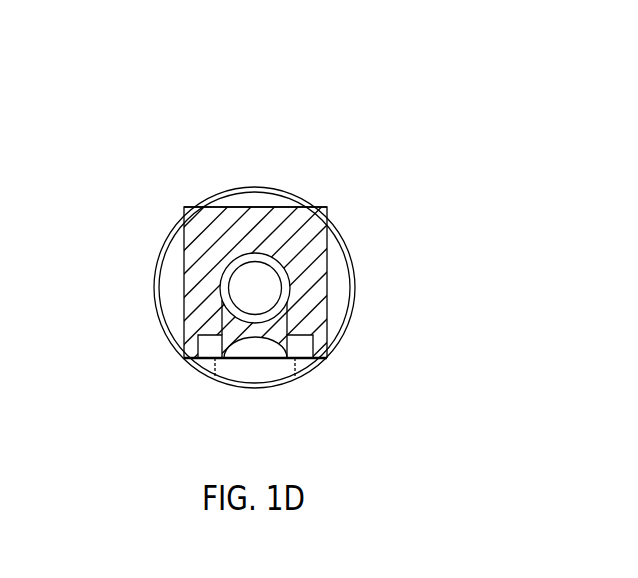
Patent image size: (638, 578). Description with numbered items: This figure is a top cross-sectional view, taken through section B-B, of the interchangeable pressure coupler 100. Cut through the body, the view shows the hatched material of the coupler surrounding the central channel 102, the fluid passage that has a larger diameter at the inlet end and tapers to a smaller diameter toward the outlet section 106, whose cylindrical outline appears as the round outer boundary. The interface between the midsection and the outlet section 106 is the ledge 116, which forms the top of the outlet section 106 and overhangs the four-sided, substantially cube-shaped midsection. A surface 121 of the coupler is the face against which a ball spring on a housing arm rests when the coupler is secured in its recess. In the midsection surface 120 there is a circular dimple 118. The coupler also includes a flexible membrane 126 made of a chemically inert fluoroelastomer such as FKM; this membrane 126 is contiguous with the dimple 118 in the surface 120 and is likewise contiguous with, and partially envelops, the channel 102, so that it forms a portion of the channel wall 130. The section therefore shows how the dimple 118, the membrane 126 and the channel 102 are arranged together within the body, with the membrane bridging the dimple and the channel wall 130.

The pressure coupler 100 is at (253, 122).
The outlet section 106 is at (255, 186).
The ledge 116 is at (335, 291).
The surface 121 is at (247, 206).
The channel 102 is at (256, 280).
The channel wall 130 is at (255, 313).
The flexible membrane 126 is at (205, 356).
The surface of the midsection 120 is at (318, 358).
The circular dimple 118 is at (253, 345).